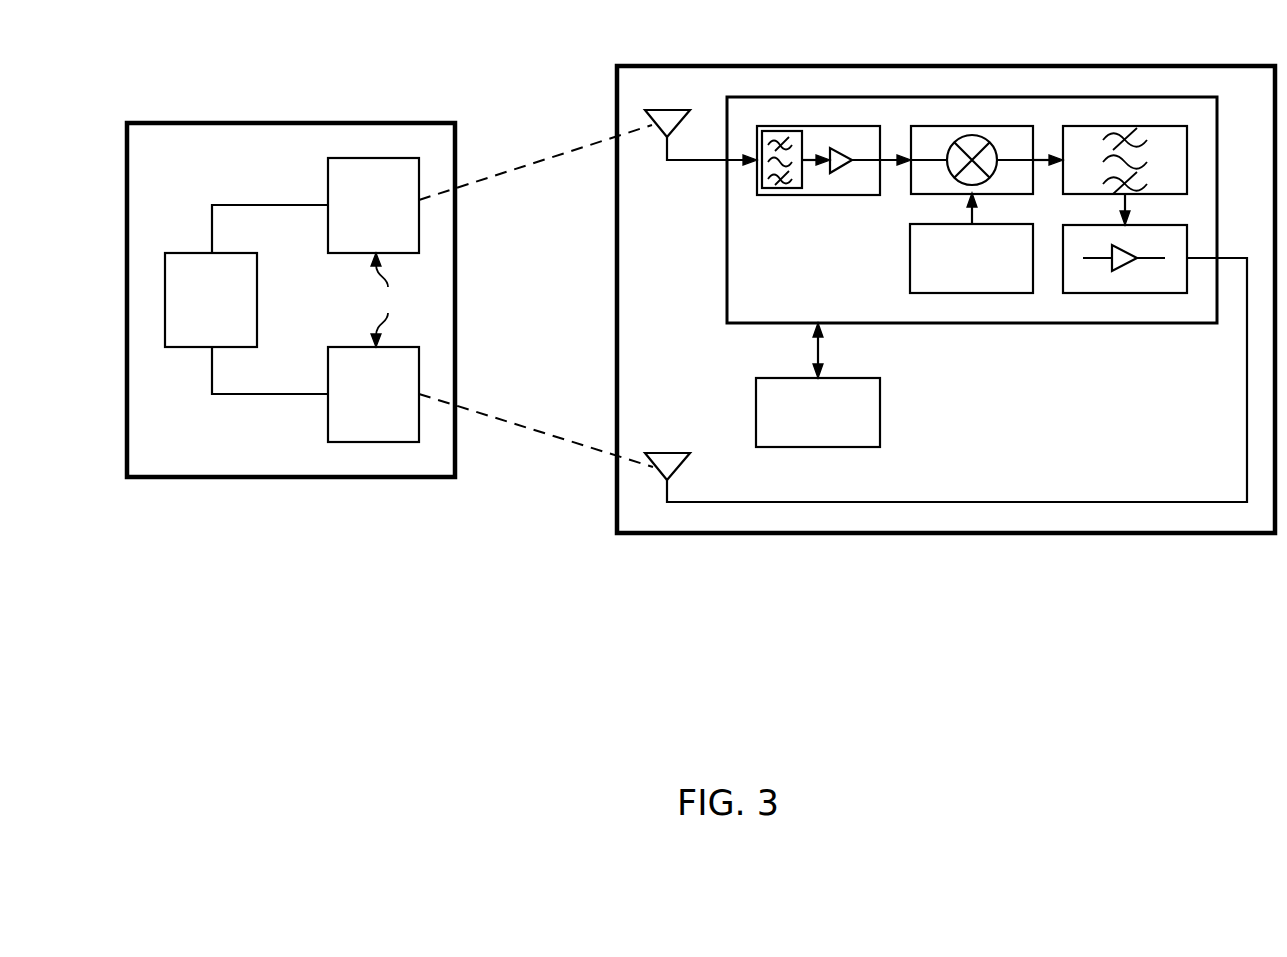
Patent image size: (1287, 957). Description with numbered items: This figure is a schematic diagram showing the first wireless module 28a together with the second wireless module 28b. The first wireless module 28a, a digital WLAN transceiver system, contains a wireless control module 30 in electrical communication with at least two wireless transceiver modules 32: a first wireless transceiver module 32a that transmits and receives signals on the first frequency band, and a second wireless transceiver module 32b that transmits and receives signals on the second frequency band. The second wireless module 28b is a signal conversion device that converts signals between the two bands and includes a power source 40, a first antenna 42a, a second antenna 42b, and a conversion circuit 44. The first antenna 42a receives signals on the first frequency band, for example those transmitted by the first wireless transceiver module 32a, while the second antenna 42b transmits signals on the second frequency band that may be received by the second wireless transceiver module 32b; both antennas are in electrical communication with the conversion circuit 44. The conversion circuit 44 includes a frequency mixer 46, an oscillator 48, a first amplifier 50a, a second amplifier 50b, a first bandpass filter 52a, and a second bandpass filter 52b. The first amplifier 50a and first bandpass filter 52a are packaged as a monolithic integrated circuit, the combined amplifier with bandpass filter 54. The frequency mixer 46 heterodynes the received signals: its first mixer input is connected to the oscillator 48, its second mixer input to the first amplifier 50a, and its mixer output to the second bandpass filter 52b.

The first wireless module 28a is at (303, 121).
The second wireless module 28b is at (945, 535).
The wireless control module 30 is at (246, 299).
The wireless transceiver module 32 is at (386, 300).
The first wireless transceiver module 32a is at (373, 205).
The second wireless transceiver module 32b is at (373, 394).
The power source 40 is at (818, 385).
The first antenna 42a is at (667, 108).
The second antenna 42b is at (667, 452).
The conversion circuit 44 is at (1208, 84).
The frequency mixer 46 is at (972, 135).
The oscillator 48 is at (971, 243).
The first amplifier 50a is at (843, 168).
The second amplifier 50b is at (1128, 264).
The first bandpass filter 52a is at (762, 173).
The second bandpass filter 52b is at (1093, 126).
The combined amplifier with bandpass filter 54 is at (818, 126).